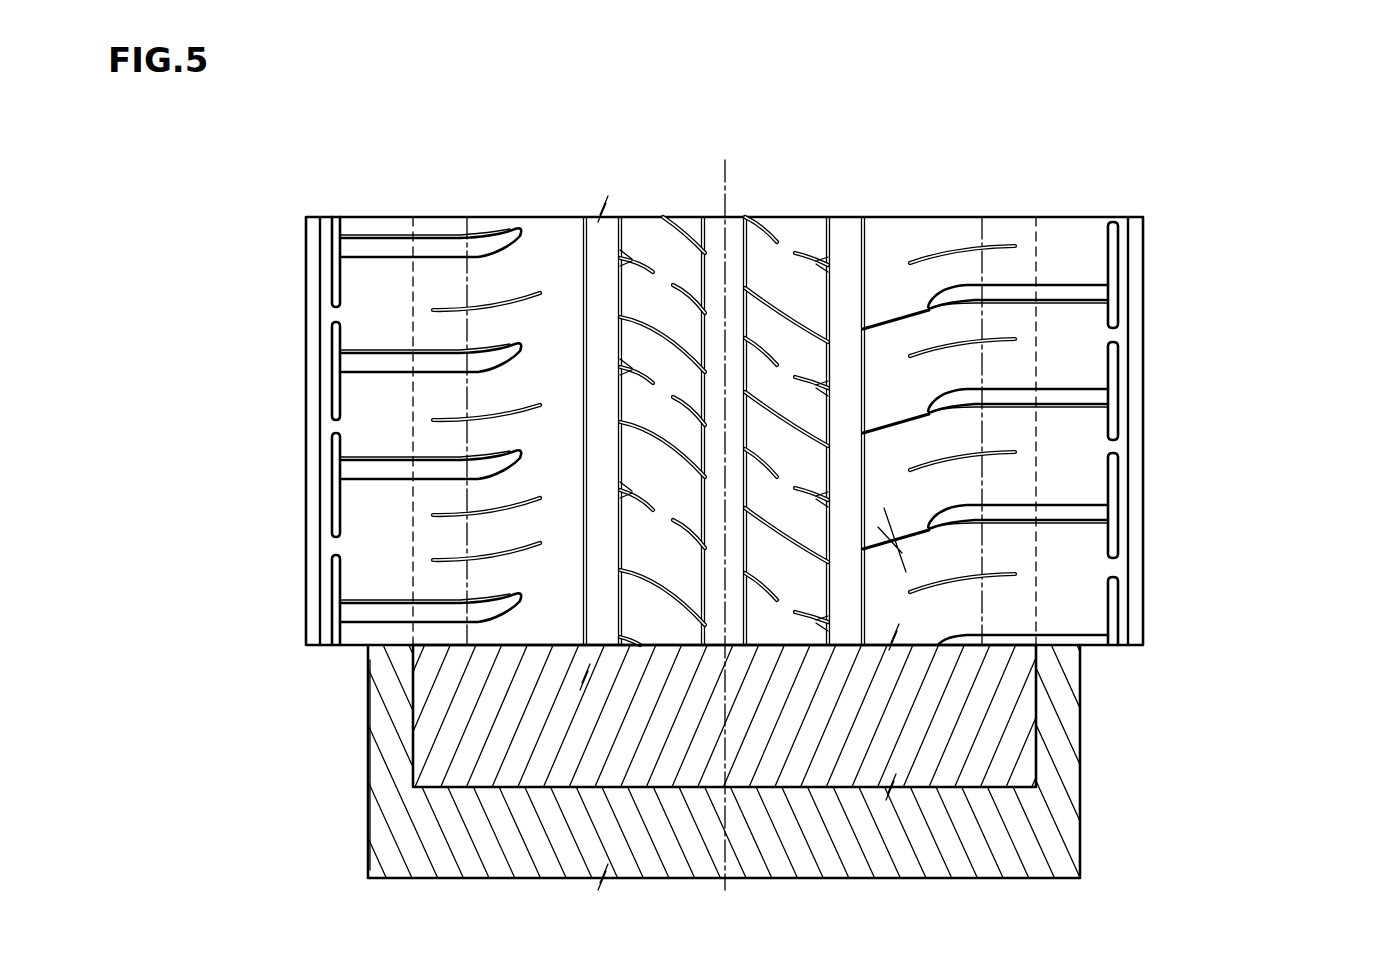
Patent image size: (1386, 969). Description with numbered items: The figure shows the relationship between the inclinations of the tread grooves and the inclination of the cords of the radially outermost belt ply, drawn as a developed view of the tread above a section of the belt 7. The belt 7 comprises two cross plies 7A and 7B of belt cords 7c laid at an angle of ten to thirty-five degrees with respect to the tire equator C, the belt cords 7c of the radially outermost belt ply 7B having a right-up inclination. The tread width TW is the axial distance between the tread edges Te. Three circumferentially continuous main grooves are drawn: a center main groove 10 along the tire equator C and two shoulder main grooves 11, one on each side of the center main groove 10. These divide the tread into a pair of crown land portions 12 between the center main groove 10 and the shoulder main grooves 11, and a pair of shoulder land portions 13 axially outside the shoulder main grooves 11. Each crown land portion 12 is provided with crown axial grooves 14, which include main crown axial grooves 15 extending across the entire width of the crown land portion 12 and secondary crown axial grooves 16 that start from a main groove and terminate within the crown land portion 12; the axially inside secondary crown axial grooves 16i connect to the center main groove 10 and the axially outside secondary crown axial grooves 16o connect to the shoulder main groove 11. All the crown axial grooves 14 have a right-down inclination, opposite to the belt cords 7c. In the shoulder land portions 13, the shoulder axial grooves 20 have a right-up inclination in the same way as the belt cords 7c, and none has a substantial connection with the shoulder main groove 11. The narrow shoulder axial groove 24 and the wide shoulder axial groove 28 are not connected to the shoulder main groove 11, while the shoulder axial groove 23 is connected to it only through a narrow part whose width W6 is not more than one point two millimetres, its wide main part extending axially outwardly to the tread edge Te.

The belt 7 is at (758, 761).
The belt ply 7A is at (1052, 833).
The radially outermost belt ply 7B is at (995, 718).
The belt cords 7c is at (467, 727).
The center main groove 10 is at (733, 263).
The shoulder main groove 11 is at (597, 250).
The crown land portion 12 is at (977, 396).
The shoulder land portion 13 is at (736, 396).
The crown axial grooves 14 is at (996, 431).
The main crown axial groove 15 is at (800, 435).
The secondary crown axial groove 16 is at (966, 431).
The axially inside secondary crown axial groove 16i is at (762, 352).
The axially outside secondary crown axial groove 16o is at (807, 383).
The shoulder axial grooves 20 is at (736, 431).
The shoulder axial groove 23 is at (958, 395).
The narrow shoulder axial groove 24 is at (492, 423).
The wide shoulder axial groove 28 is at (428, 368).
The width of narrow part W6 is at (893, 537).
The tread width TW is at (982, 217).
The tread edge Te is at (467, 200).
The tire equator C is at (724, 512).